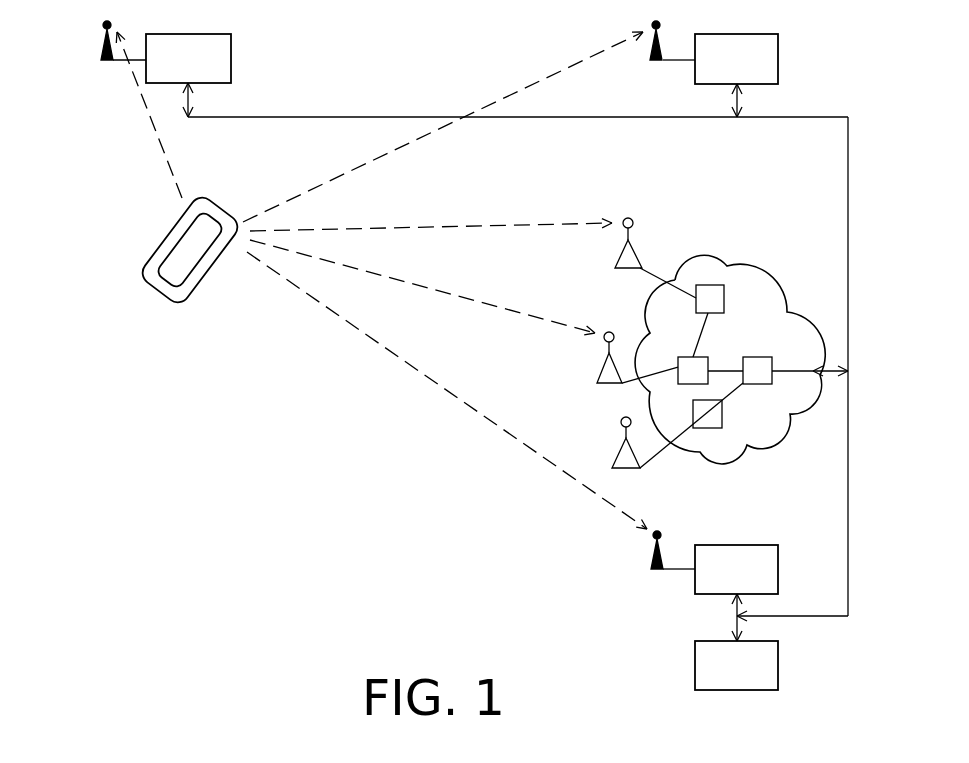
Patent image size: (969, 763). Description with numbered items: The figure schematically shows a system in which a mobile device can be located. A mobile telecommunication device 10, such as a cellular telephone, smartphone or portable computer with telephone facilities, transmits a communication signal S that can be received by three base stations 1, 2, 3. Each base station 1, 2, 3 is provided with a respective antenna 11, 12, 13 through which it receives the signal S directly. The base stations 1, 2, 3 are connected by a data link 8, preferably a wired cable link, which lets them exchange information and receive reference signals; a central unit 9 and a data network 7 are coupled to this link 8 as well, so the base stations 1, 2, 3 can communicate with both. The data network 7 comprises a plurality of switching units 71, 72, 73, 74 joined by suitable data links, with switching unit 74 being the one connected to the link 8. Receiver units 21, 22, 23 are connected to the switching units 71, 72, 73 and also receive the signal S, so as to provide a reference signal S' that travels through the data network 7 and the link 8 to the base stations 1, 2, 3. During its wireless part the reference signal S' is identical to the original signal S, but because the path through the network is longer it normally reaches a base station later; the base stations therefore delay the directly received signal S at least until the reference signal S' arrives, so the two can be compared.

The base station 1 is at (231, 60).
The base station 2 is at (778, 60).
The base station 3 is at (778, 569).
The antenna 11 is at (102, 42).
The antenna 12 is at (652, 26).
The antenna 13 is at (652, 548).
The central unit 9 is at (738, 690).
The data link 8 is at (848, 502).
The mobile telecommunication device 10 is at (150, 290).
The communication signal S is at (377, 280).
The reference signal S' is at (431, 277).
The receiver unit 21 is at (638, 254).
The receiver unit 22 is at (598, 378).
The receiver unit 23 is at (614, 462).
The data network 7 is at (767, 448).
The switching unit 71 is at (726, 273).
The switching unit 72 is at (710, 360).
The switching unit 73 is at (706, 428).
The switching unit 74 is at (759, 360).